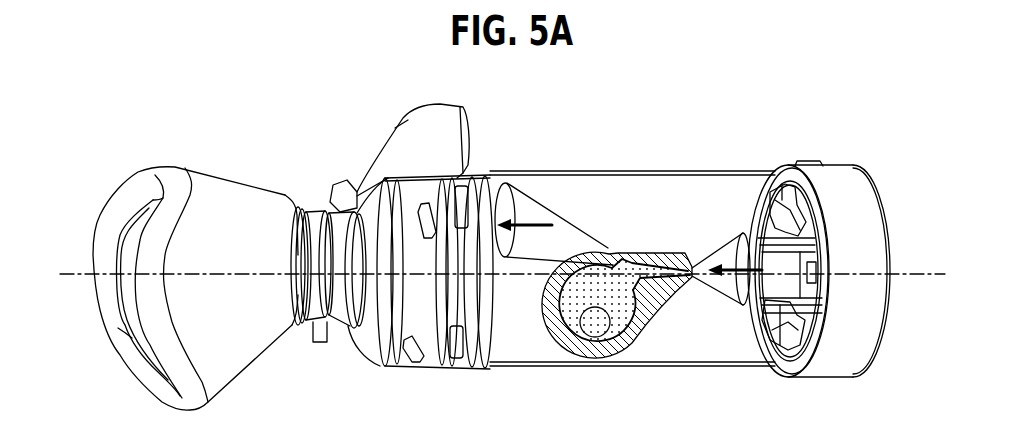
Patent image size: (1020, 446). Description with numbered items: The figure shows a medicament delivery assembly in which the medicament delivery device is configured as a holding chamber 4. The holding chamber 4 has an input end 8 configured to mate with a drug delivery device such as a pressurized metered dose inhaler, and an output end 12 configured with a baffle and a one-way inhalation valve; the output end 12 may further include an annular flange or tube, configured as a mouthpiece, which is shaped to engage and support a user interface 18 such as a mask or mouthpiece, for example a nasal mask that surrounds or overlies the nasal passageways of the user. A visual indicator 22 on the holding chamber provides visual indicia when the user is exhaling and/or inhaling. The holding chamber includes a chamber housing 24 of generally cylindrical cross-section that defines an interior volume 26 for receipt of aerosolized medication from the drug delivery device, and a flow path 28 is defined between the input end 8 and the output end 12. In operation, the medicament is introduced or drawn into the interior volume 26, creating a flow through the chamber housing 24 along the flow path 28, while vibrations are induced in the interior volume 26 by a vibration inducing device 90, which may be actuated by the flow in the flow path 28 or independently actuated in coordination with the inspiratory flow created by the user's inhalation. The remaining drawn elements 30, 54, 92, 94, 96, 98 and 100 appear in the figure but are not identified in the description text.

The holding chamber 4 is at (501, 375).
The input end 8 is at (901, 184).
The output end 12 is at (346, 368).
The user interface 18 is at (244, 188).
The visual indicator 22 is at (420, 120).
The chamber housing 24 is at (649, 167).
The interior volume 26 is at (678, 351).
The flow path 28 is at (535, 216).
The end cap 30 is at (873, 350).
The longitudinal axis 54 is at (924, 272).
The vibration inducing device 90 is at (588, 348).
The capsule holder 92 is at (566, 348).
The outlet channel 94 is at (696, 264).
The inlet opening 96 is at (606, 243).
The pin 98 is at (598, 328).
The capsule 100 is at (556, 306).